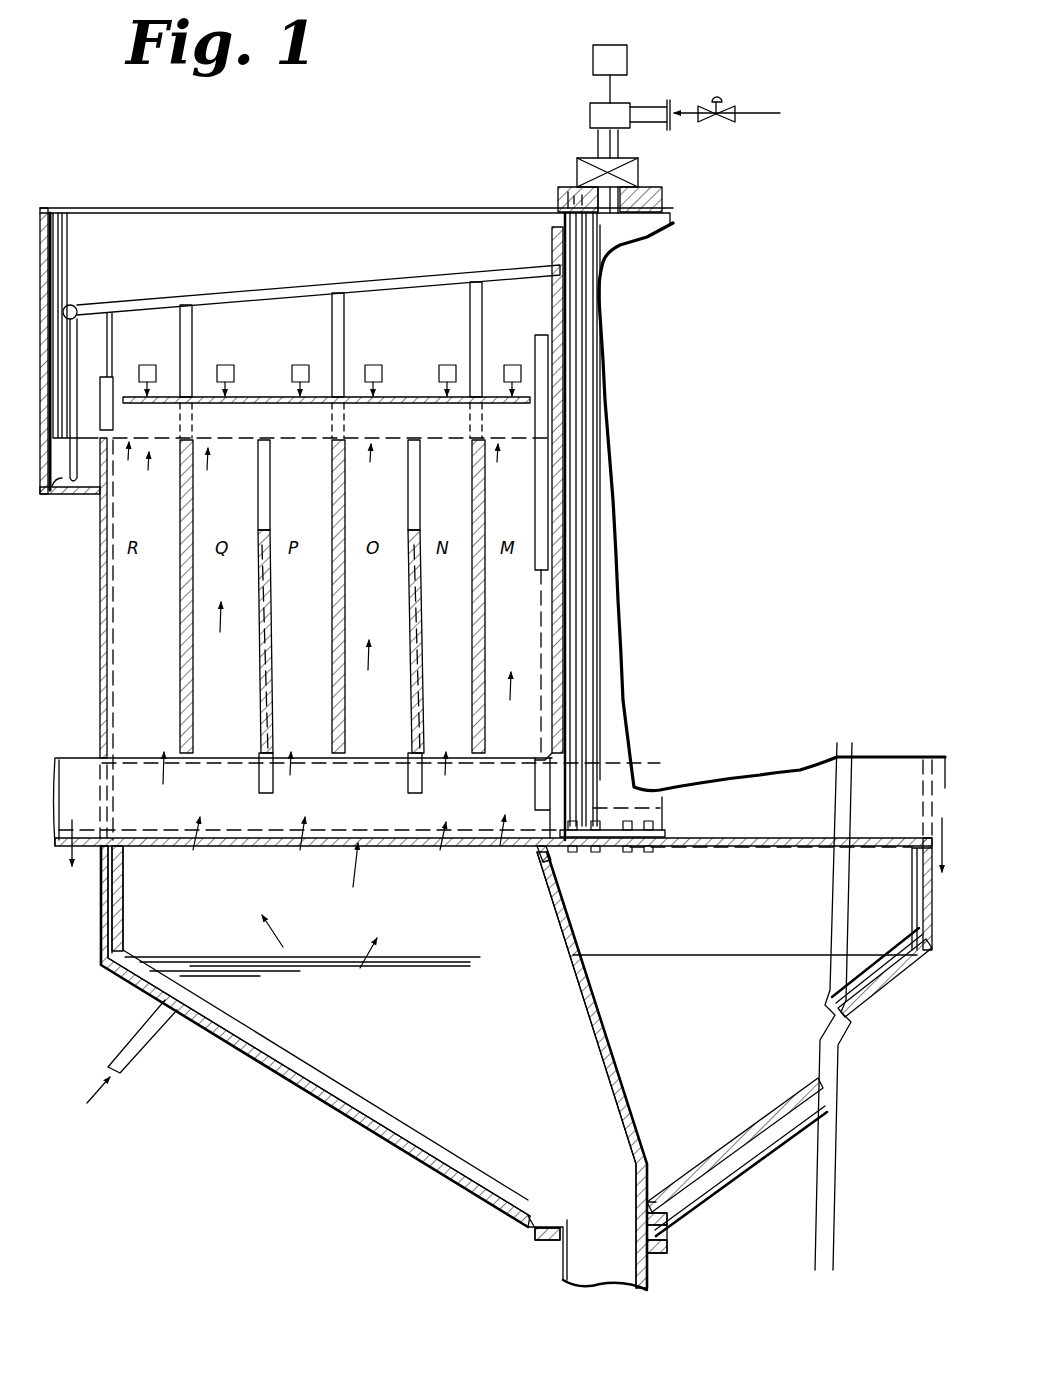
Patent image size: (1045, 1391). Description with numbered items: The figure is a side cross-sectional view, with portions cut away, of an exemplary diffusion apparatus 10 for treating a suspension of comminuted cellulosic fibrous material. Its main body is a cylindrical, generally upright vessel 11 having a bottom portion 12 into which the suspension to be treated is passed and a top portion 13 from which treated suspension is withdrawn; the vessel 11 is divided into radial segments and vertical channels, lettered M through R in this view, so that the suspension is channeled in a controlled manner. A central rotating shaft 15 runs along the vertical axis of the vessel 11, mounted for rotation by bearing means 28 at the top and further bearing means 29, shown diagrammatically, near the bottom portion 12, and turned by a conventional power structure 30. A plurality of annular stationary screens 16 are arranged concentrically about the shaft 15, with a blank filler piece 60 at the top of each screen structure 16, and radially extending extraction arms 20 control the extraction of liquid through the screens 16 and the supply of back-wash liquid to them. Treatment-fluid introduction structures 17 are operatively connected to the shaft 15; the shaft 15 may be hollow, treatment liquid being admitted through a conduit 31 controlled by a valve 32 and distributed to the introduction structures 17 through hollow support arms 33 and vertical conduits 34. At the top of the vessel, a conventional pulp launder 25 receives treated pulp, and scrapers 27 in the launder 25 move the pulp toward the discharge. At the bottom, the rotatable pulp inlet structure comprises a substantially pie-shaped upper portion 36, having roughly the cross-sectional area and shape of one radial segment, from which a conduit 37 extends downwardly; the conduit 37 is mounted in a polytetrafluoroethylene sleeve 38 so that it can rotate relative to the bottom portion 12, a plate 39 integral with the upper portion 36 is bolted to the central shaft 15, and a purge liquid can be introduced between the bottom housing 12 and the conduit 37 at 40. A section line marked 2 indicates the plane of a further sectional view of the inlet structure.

The diffusion apparatus 10 is at (160, 157).
The vessel 11 is at (99, 705).
The bottom portion 12 is at (99, 925).
The top portion 13 is at (60, 280).
The central rotating shaft 15 is at (550, 225).
The annular stationary screens 16 is at (130, 758).
The treatment-fluid introduction structures 17 is at (320, 465).
The extraction arms 20 is at (373, 762).
The pulp launder 25 is at (96, 505).
The scrapers 27 is at (64, 490).
The bearing means 28 is at (700, 191).
The further bearing means 29 is at (588, 793).
The power structure 30 is at (593, 65).
The conduit 31 is at (645, 108).
The valve 32 is at (740, 109).
The hollow support arms 33 is at (400, 280).
The vertical conduits 34 is at (193, 324).
The upper portion 36 is at (549, 866).
The conduit 37 is at (612, 1058).
The polytetrafluoroethylene sleeve 38 is at (668, 1247).
The plate 39 is at (563, 848).
The purge liquid introduction point 40 is at (130, 1065).
The blank filler piece 60 is at (406, 501).
The section line 2- 2 is at (506, 856).